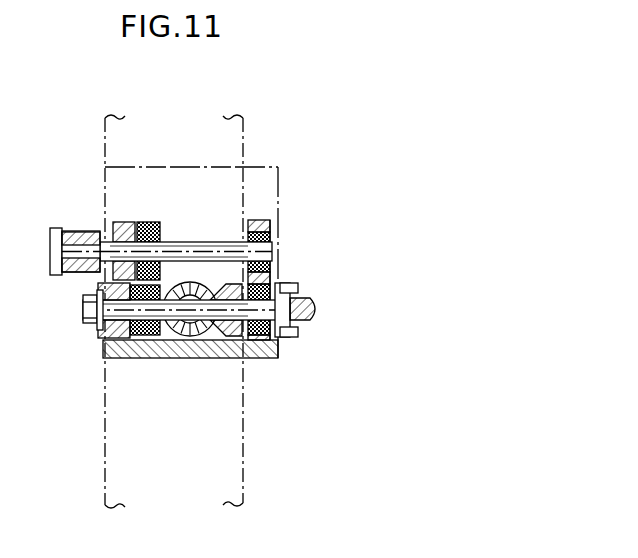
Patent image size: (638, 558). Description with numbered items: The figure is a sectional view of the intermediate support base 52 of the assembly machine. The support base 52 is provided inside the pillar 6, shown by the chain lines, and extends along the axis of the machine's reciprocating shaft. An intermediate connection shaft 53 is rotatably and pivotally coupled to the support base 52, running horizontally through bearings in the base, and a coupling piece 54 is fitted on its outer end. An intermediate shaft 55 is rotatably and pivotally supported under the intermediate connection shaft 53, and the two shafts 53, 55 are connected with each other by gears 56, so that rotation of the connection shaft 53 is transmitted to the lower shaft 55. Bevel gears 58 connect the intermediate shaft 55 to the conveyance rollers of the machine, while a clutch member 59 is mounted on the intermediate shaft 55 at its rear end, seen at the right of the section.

The pillar 6 is at (250, 124).
The intermediate support base 52 is at (262, 190).
The intermediate connection shaft 53 is at (200, 242).
The coupling 54 is at (72, 230).
The intermediate shaft 55 is at (213, 342).
The gears 56 is at (98, 288).
The bevel gears 58 is at (100, 338).
The clutch member 59 is at (293, 332).